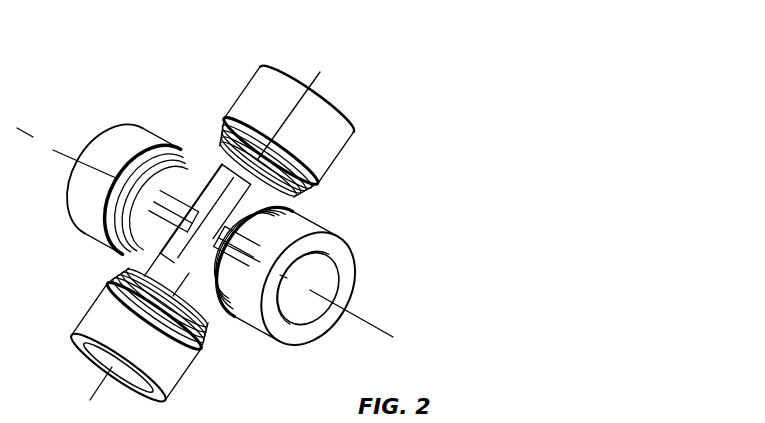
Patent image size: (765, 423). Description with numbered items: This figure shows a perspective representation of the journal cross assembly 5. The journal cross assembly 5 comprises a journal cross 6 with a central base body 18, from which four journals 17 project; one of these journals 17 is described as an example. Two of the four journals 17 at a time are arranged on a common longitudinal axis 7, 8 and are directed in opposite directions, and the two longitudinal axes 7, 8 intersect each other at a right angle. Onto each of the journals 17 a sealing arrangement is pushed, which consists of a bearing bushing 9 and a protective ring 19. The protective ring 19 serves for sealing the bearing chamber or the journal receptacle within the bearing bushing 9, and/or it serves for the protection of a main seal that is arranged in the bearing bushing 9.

The journal cross assembly 5 is at (393, 138).
The journal cross 6 is at (191, 172).
The longitudinal axis 7 is at (301, 114).
The longitudinal axis 8 is at (373, 323).
The bearing bushing 9 is at (273, 84).
The journal 17 is at (222, 122).
The central base body 18 is at (130, 243).
The protective ring 19 is at (308, 192).